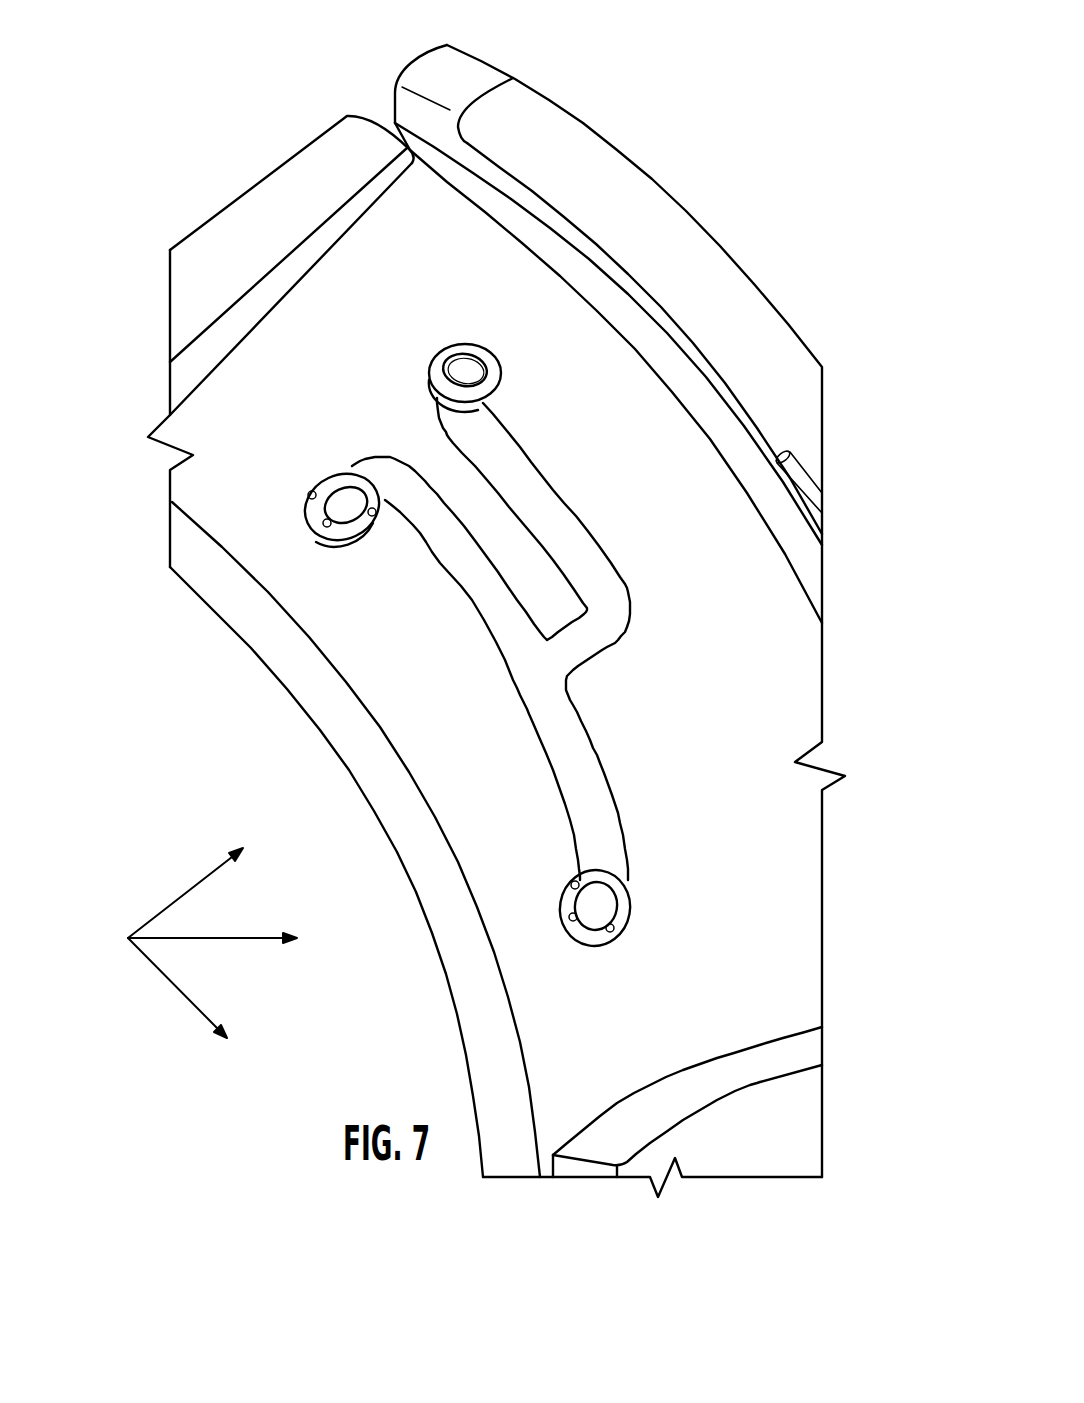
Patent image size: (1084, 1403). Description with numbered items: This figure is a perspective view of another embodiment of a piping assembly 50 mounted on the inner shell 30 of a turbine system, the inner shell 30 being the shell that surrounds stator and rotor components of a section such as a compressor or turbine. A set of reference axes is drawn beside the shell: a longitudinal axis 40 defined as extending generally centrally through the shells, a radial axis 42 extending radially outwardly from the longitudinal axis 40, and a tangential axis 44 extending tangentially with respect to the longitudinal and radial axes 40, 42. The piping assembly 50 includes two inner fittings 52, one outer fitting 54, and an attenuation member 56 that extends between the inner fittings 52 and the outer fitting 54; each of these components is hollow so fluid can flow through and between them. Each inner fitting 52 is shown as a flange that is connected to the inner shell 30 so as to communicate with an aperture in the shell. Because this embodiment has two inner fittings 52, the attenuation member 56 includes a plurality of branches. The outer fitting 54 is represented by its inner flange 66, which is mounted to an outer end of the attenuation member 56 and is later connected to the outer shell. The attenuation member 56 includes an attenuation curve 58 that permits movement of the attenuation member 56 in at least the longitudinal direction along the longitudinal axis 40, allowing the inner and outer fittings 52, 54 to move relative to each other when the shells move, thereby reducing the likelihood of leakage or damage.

The inner shell 30 is at (338, 282).
The longitudinal axis 40 is at (196, 885).
The radial axis 42 is at (236, 938).
The tangential axis 44 is at (192, 1004).
The piping assembly 50 is at (503, 656).
The inner fitting 52 is at (313, 460).
The outer fitting 54 is at (481, 343).
The attenuation member 56 is at (462, 632).
The attenuation curve 58 is at (635, 642).
The inner flange 66 is at (482, 346).